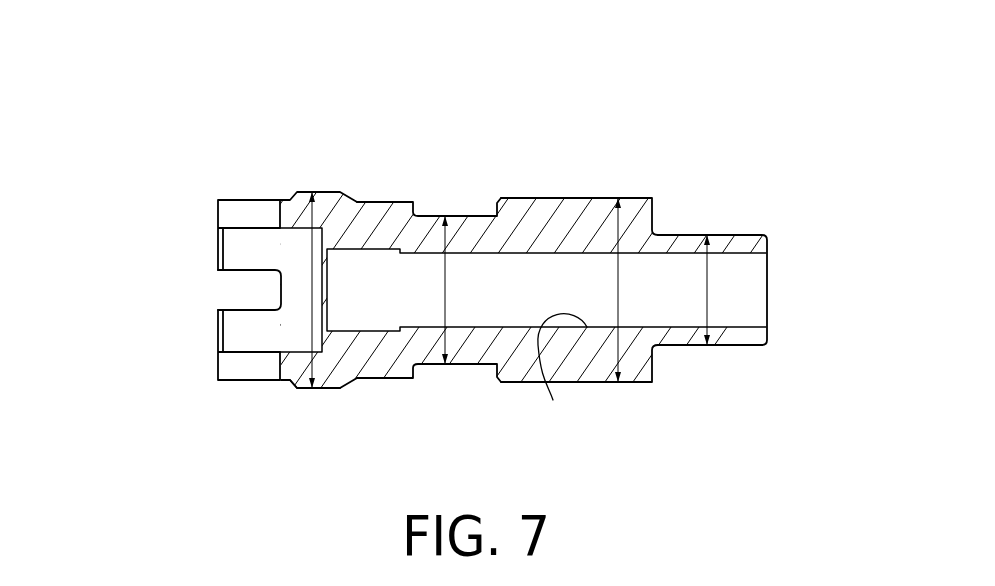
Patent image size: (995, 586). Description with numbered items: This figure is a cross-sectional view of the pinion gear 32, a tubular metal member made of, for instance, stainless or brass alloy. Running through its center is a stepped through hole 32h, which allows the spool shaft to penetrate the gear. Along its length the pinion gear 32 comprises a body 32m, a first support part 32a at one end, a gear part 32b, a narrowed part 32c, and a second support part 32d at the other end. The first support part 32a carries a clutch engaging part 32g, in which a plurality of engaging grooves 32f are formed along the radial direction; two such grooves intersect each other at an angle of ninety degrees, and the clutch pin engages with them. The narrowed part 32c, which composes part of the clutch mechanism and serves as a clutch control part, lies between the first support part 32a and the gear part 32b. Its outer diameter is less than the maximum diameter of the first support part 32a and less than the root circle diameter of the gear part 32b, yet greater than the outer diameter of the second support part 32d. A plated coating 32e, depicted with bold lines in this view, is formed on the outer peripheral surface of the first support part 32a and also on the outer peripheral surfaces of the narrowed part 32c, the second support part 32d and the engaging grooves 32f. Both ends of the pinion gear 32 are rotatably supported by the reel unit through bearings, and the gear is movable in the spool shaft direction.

The pinion gear 32 is at (472, 259).
The first support part 32a is at (313, 187).
The gear part 32b is at (578, 197).
The narrowed part 32c is at (462, 215).
The second support part 32d is at (698, 234).
The plated coating 32e is at (328, 389).
The engaging grooves 32f is at (278, 213).
The clutch engaging part 32g is at (251, 199).
The stepped through hole 32h is at (553, 400).
The body 32m is at (508, 176).